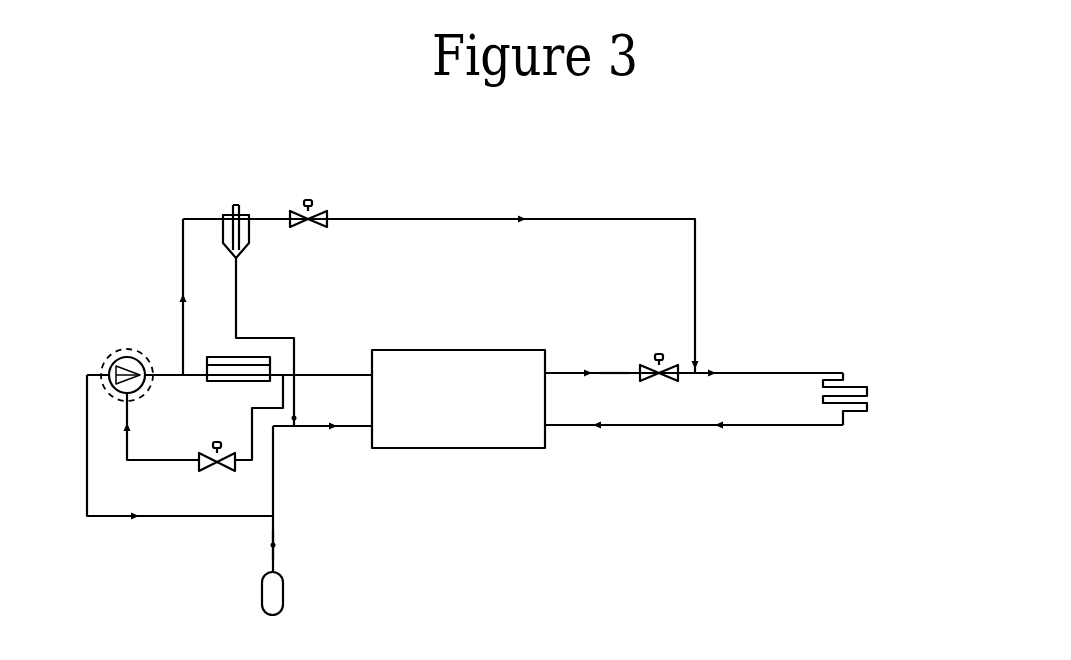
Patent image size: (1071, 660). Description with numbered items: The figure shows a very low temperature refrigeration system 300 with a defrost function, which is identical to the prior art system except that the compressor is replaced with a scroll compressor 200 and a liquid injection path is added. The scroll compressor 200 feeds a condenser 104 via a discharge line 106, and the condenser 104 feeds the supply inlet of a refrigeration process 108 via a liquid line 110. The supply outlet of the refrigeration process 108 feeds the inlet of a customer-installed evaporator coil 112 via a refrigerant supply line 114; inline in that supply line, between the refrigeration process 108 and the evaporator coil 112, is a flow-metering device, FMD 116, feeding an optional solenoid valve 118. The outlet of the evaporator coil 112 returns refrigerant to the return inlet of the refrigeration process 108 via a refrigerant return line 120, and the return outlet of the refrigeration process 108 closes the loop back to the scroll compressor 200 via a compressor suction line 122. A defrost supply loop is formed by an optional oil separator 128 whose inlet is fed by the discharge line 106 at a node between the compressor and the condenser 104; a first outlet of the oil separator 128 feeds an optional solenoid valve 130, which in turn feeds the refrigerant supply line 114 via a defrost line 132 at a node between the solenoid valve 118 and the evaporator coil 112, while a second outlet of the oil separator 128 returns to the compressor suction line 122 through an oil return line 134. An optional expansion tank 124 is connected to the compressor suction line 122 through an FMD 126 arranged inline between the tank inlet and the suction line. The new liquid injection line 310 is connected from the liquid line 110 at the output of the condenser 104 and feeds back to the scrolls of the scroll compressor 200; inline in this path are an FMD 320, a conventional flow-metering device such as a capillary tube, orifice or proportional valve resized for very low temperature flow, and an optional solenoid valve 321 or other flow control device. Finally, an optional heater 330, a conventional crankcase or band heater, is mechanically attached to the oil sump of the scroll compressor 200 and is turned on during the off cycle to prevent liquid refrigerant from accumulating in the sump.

The very low temperature refrigeration system 300 is at (652, 167).
The heater 330 is at (102, 360).
The compressor suction line 122 is at (313, 430).
The discharge line 106 is at (178, 368).
The defrost line 132 is at (400, 217).
The oil separator 128 is at (225, 214).
The oil return line 134 is at (238, 282).
The solenoid valve 130 is at (308, 208).
The scroll compressor 200 is at (128, 356).
The condenser 104 is at (230, 383).
The liquid line 110 is at (353, 372).
The liquid injection line 310 is at (177, 462).
The FMD 320 is at (165, 462).
The solenoid valve 321 is at (202, 466).
The FMD 126 is at (270, 545).
The expansion tank 124 is at (282, 585).
The refrigeration process 108 is at (500, 427).
The refrigerant supply line 114 is at (787, 372).
The FMD 116 is at (612, 373).
The solenoid valve 118 is at (658, 364).
The refrigerant return line 120 is at (650, 427).
The evaporator coil 112 is at (862, 382).